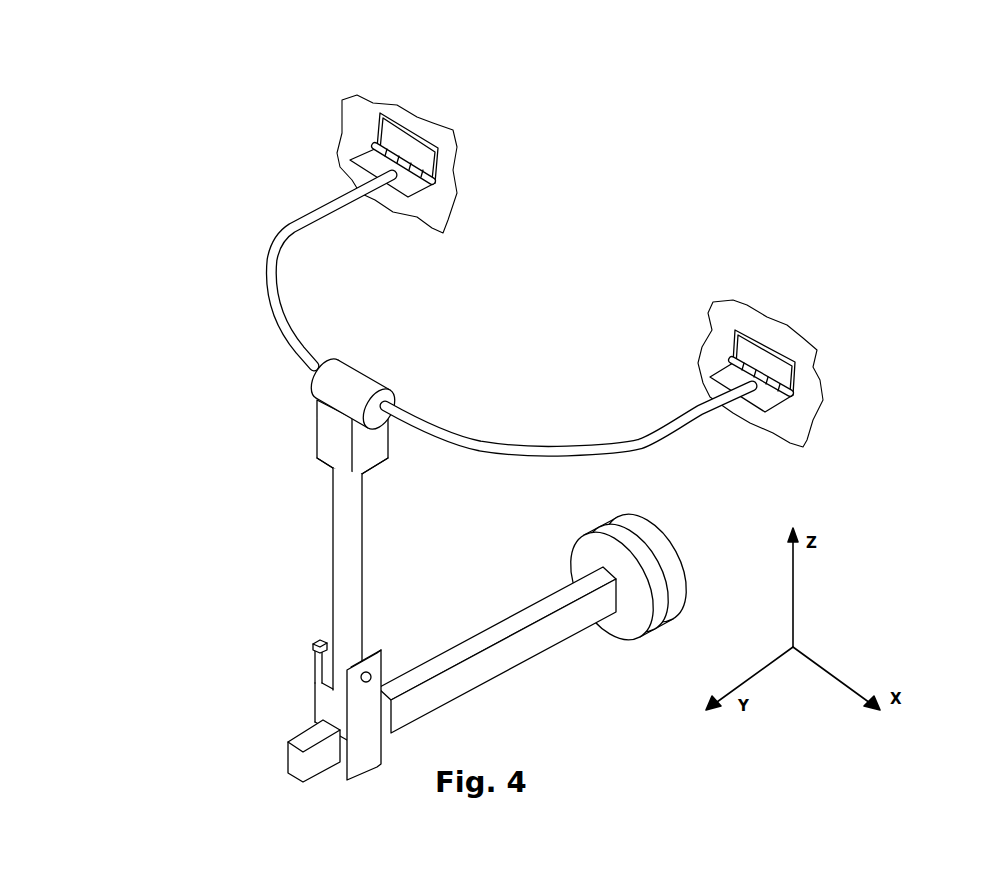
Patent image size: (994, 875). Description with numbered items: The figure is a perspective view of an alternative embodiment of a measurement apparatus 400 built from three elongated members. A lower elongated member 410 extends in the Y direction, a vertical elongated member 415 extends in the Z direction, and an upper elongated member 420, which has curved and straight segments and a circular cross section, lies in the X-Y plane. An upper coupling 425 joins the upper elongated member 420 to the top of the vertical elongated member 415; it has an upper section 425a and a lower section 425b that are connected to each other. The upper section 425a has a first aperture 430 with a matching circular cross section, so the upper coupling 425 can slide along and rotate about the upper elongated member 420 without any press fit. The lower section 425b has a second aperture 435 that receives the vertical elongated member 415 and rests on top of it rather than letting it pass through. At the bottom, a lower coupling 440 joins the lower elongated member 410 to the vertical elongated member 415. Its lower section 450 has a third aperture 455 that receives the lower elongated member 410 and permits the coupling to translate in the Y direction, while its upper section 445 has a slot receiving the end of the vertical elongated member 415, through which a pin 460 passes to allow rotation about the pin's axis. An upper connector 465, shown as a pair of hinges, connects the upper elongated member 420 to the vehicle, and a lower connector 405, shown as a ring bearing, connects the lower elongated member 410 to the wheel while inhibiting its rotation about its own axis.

The measurement apparatus 400 is at (144, 601).
The lower connector 405 is at (637, 570).
The lower elongated member 410 is at (497, 650).
The vertical elongated member 415 is at (300, 581).
The upper elongated member 420 is at (272, 270).
The upper coupling 425 is at (363, 351).
The upper section 425a is at (314, 397).
The lower section 425b is at (310, 444).
The first aperture 430 is at (568, 411).
The second aperture 435 is at (368, 472).
The lower coupling 440 is at (288, 718).
The upper section 445 is at (264, 683).
The lower section 450 is at (362, 771).
The third aperture 455 is at (340, 760).
The pin 460 is at (272, 654).
The upper connector 465 is at (385, 132).